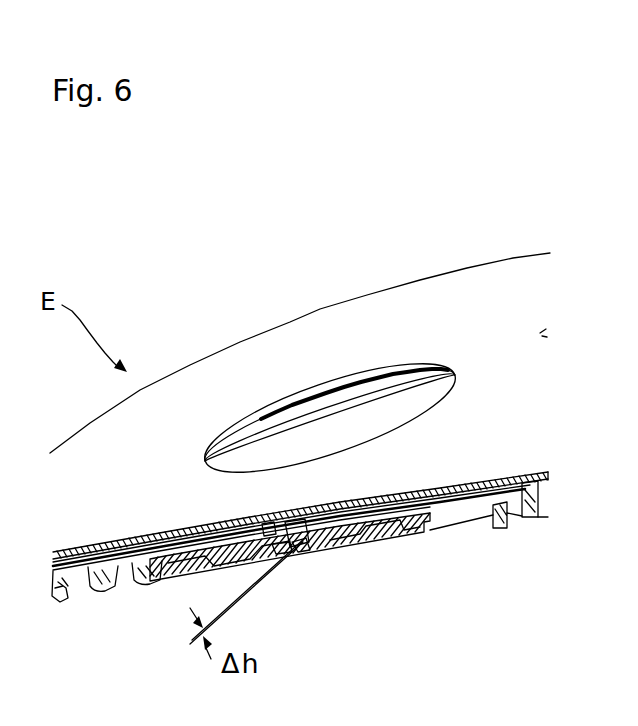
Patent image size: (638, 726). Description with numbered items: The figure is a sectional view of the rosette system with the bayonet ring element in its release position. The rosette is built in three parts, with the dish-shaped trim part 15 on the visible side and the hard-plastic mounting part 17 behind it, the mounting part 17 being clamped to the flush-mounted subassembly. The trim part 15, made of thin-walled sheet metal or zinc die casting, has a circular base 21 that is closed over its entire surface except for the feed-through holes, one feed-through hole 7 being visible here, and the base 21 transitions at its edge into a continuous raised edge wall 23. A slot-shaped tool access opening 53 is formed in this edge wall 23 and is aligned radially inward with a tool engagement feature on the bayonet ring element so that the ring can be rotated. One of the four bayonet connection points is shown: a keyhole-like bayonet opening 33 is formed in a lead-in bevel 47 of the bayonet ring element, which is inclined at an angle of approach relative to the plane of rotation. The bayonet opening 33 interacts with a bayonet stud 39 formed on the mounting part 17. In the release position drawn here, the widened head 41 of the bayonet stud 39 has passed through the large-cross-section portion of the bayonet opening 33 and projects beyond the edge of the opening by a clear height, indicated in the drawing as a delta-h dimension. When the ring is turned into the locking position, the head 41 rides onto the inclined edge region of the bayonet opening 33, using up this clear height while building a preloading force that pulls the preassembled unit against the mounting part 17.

The feed-through hole 7 is at (374, 369).
The trim part 15 is at (300, 336).
The mounting part 17 is at (420, 540).
The base 21 is at (467, 293).
The edge wall 23 is at (528, 492).
The bayonet opening 33 is at (282, 543).
The bayonet stud 39 is at (298, 545).
The widened head 41 is at (293, 545).
The lead-in bevel 47 is at (268, 530).
The tool access opening 53 is at (58, 597).